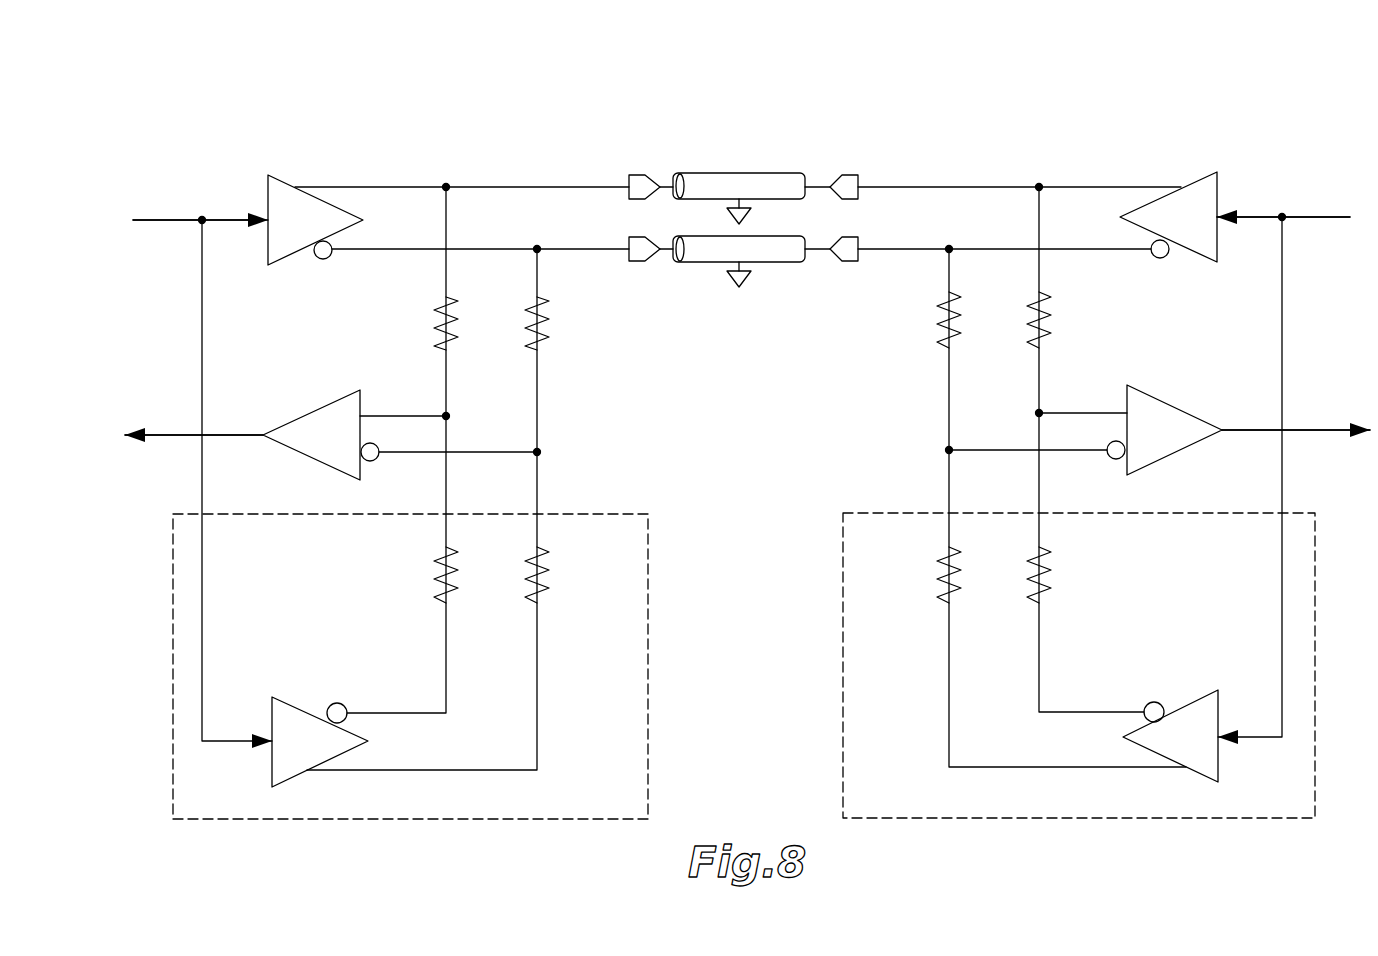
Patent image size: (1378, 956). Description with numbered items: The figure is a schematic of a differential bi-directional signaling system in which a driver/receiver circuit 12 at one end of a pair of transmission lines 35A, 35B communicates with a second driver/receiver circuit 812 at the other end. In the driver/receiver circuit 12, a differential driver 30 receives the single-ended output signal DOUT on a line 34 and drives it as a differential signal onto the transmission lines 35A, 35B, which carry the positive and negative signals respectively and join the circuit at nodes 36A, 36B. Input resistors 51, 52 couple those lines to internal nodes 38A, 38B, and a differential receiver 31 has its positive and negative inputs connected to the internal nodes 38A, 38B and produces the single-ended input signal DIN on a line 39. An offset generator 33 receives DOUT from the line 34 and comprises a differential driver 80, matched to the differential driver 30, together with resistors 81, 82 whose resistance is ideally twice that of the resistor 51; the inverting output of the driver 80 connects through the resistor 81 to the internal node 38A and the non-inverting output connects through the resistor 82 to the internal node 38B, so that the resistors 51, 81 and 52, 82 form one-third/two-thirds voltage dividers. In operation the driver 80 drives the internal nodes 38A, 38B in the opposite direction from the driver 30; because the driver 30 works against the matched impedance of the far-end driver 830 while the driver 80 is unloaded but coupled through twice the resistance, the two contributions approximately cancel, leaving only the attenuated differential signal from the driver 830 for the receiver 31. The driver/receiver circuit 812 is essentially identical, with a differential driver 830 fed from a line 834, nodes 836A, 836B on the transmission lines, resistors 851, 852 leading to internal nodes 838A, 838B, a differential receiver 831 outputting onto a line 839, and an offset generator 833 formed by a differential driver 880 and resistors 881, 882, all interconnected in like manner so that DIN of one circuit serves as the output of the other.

The driver/receiver circuit 12 is at (261, 71).
The driver/receiver circuit 812 is at (1241, 69).
The differential driver 30 is at (402, 202).
The line 34 is at (118, 237).
The node 36A is at (467, 162).
The node 36B is at (561, 224).
The transmission line 35A is at (813, 174).
The transmission line 35B is at (844, 272).
The node 836A is at (1069, 162).
The node 836B is at (980, 222).
The differential driver 830 is at (1165, 199).
The line 834 is at (1341, 244).
The resistor 51 is at (413, 306).
The resistor 52 is at (566, 346).
The resistor 852 is at (918, 300).
The resistor 851 is at (1074, 341).
The differential receiver 31 is at (400, 435).
The internal node 38A is at (476, 391).
The internal node 38B is at (579, 466).
The line 39 is at (160, 455).
The internal node 838A is at (1005, 391).
The internal node 838B is at (919, 431).
The differential receiver 831 is at (1085, 430).
The line 839 is at (1299, 403).
The offset generator 33 is at (450, 666).
The offset generator 833 is at (1035, 665).
The resistor 81 is at (434, 600).
The resistor 82 is at (570, 600).
The resistor 881 is at (946, 596).
The resistor 882 is at (1073, 596).
The differential driver 80 is at (321, 723).
The differential driver 880 is at (1167, 719).